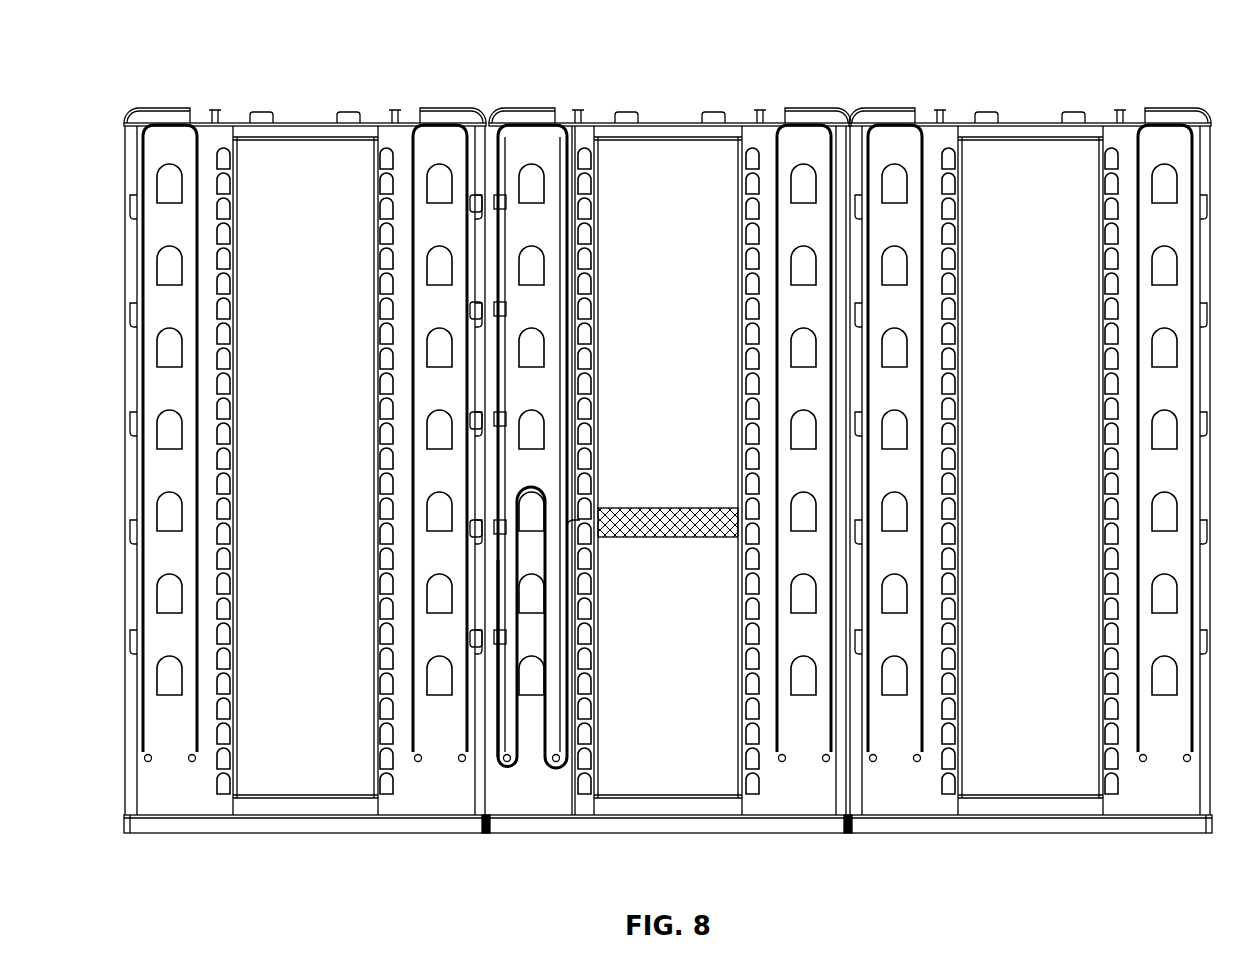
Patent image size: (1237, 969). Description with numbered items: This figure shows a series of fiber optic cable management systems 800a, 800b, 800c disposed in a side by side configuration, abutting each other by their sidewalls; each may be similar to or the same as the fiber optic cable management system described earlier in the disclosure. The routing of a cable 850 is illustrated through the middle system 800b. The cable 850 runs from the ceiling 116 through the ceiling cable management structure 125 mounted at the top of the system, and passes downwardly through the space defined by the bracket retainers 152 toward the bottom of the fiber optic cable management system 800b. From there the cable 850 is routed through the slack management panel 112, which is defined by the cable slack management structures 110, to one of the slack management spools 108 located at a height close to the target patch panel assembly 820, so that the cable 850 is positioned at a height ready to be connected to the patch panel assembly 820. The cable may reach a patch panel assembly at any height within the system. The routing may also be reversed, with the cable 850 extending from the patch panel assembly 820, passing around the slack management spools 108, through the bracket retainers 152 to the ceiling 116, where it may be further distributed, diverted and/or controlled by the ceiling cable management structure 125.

The fiber optic cable management system 800a is at (296, 99).
The fiber optic cable management system 800b is at (619, 458).
The fiber optic cable management system 800c is at (1020, 80).
The ceiling 116 is at (675, 96).
The ceiling cable management structure 125 is at (577, 103).
The cable slack management structures 110 is at (568, 258).
The slack management panel 112 is at (563, 385).
The slack management spool 108 is at (541, 491).
The bracket retainers 152 is at (484, 218).
The patch panel assembly 820 is at (668, 520).
The cable 850 is at (505, 573).